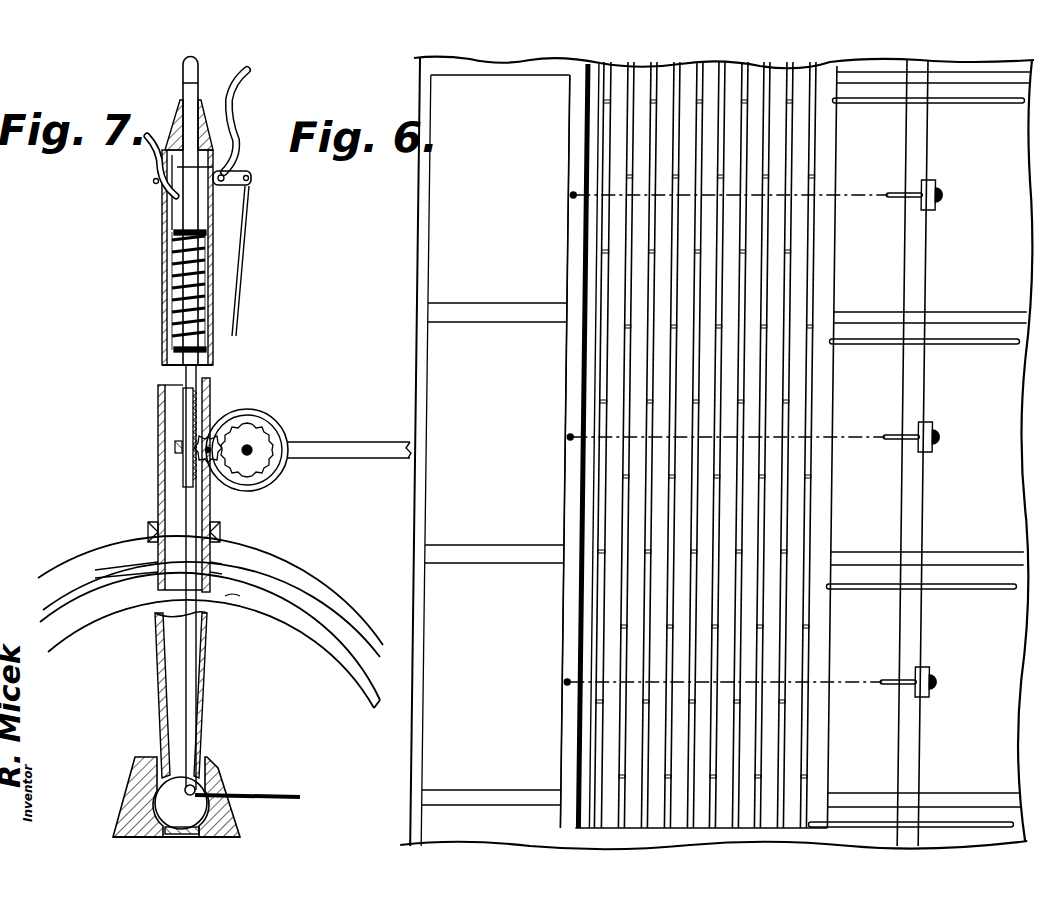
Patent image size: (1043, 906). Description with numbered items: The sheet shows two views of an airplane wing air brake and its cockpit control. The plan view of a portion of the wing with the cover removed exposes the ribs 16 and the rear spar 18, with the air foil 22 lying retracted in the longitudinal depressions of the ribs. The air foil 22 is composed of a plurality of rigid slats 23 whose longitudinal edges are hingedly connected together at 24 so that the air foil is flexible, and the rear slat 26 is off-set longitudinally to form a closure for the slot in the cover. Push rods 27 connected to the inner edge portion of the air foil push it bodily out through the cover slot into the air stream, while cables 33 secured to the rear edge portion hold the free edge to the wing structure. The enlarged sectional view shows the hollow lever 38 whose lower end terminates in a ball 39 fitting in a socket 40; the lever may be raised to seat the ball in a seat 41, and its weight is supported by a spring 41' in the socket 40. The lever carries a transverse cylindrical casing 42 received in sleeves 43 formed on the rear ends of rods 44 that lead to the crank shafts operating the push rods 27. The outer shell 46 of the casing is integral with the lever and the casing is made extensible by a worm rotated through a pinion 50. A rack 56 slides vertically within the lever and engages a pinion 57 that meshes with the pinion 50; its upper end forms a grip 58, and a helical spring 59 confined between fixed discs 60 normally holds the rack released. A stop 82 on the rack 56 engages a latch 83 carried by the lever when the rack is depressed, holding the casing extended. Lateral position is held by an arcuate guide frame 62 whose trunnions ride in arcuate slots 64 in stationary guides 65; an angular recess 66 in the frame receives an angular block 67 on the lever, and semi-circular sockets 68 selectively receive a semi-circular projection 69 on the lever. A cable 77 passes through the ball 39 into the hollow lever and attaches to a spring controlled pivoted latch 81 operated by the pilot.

In FIG. 6, the ribs 16 is at (870, 313).
In FIG. 6, the rear spar 18 is at (930, 511).
In FIG. 6, the air foil 22 is at (600, 250).
In FIG. 6, the rigid slats 23 is at (779, 158).
In FIG. 6, the hinged connection 24 is at (816, 258).
In FIG. 6, the rear slat 26 is at (571, 384).
In FIG. 6, the push rods 27 is at (979, 105).
In FIG. 6, the cables 33 is at (589, 194).
In FIG. 7, the hollow lever 38 is at (158, 473).
In FIG. 7, the ball 39 is at (165, 803).
In FIG. 7, the socket 40 is at (230, 781).
In FIG. 7, the seat 41 is at (176, 779).
In FIG. 7, the spring 41' is at (229, 821).
In FIG. 7, the transverse cylindrical casing 42 is at (273, 423).
In FIG. 7, the sleeves 43 is at (288, 438).
In FIG. 7, the rods 44 is at (366, 460).
In FIG. 7, the outer shell of the casing 46 is at (220, 416).
In FIG. 7, the pinion 50 is at (277, 472).
In FIG. 7, the rack 56 is at (158, 434).
In FIG. 7, the pinion 57 is at (218, 482).
In FIG. 7, the grip 58 is at (185, 72).
In FIG. 7, the helical spring 59 is at (163, 276).
In FIG. 7, the fixed discs 60 is at (178, 233).
In FIG. 7, the arcuate guide frame 62 is at (217, 552).
In FIG. 7, the arcuate slots 64 is at (332, 603).
In FIG. 7, the guides 65 is at (264, 583).
In FIG. 7, the longitudinal angular recess 66 is at (146, 530).
In FIG. 7, the angular block 67 is at (150, 539).
In FIG. 7, the semi-circular sockets 68 is at (214, 537).
In FIG. 7, the semi-circular projection 69 is at (212, 534).
In FIG. 7, the cable 77 is at (238, 308).
In FIG. 7, the spring controlled pivoted latch 81 is at (242, 129).
In FIG. 7, the stop 82 is at (213, 167).
In FIG. 7, the latch 83 is at (151, 164).